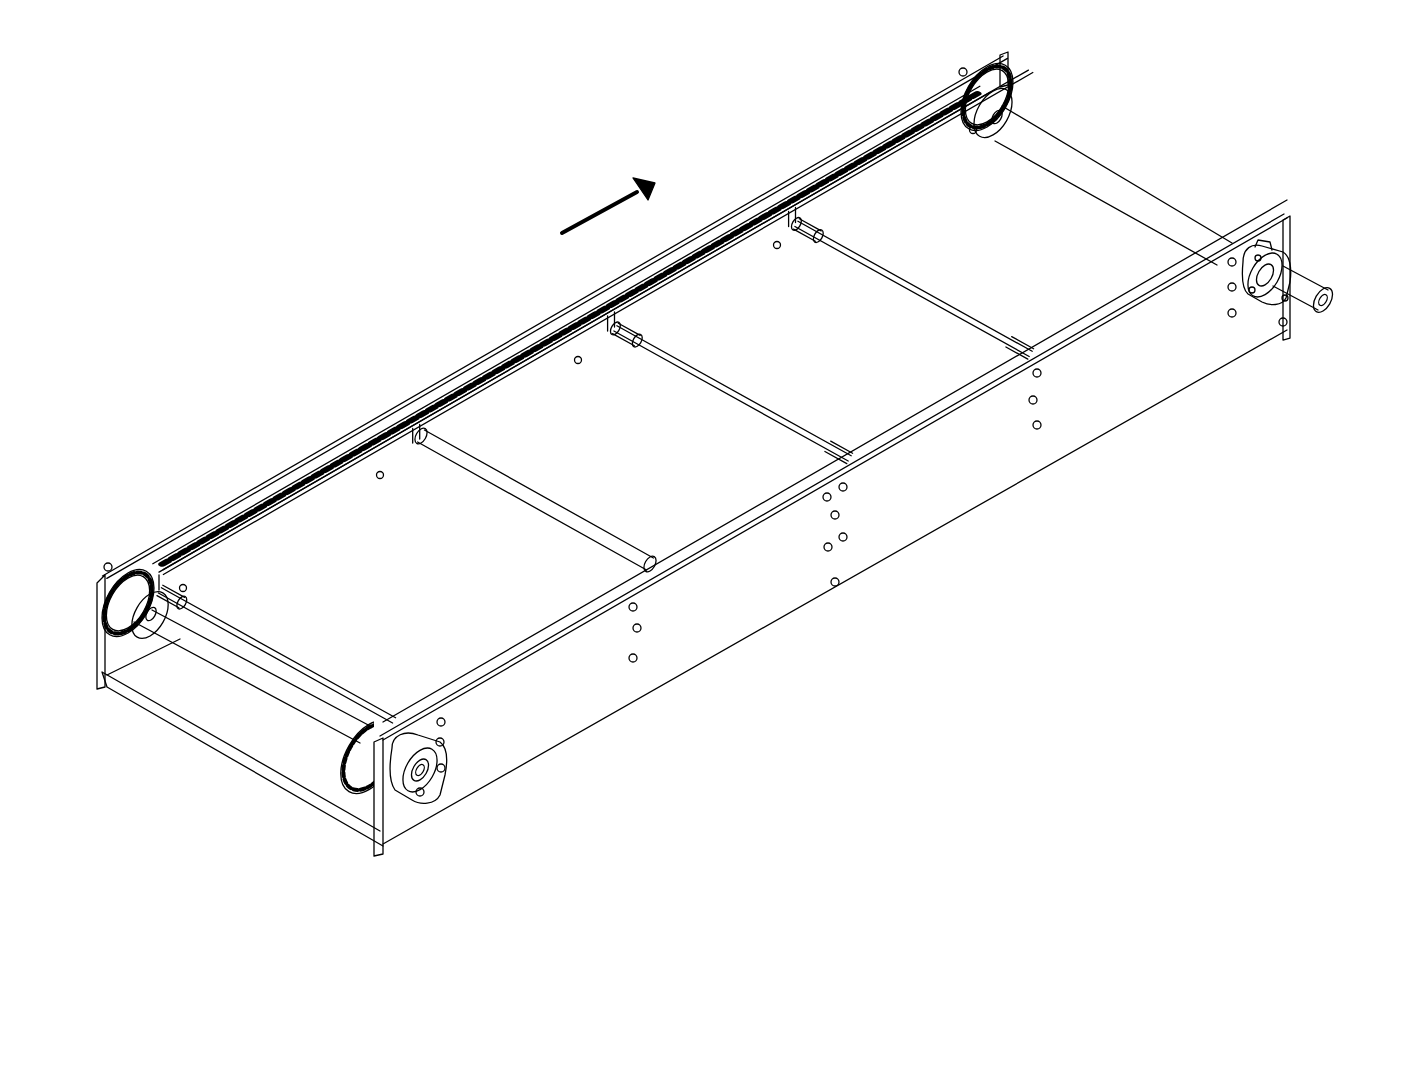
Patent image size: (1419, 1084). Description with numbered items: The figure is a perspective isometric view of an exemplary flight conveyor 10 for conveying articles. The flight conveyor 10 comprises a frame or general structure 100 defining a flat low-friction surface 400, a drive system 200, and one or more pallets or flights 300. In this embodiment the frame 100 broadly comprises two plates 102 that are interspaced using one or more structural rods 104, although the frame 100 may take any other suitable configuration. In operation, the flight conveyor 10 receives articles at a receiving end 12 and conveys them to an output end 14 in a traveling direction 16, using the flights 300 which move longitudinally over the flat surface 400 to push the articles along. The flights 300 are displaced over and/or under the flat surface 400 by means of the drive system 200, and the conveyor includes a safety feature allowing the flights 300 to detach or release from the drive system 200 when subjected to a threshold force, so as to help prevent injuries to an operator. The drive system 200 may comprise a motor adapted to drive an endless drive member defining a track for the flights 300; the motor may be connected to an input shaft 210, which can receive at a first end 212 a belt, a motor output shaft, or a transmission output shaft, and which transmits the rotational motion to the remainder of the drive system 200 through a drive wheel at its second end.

The flight conveyor 10 is at (773, 128).
The receiving end 12 is at (245, 705).
The output end 14 is at (1065, 200).
The traveling direction 16 is at (608, 205).
The frame 100 is at (697, 612).
The plates 102 is at (923, 495).
The structural rods 104 is at (305, 795).
The drive system 200 is at (1308, 278).
The input shaft 210 is at (1303, 302).
The first end 212 is at (1318, 317).
The flights 300 is at (628, 330).
The flat low-friction surface 400 is at (370, 495).